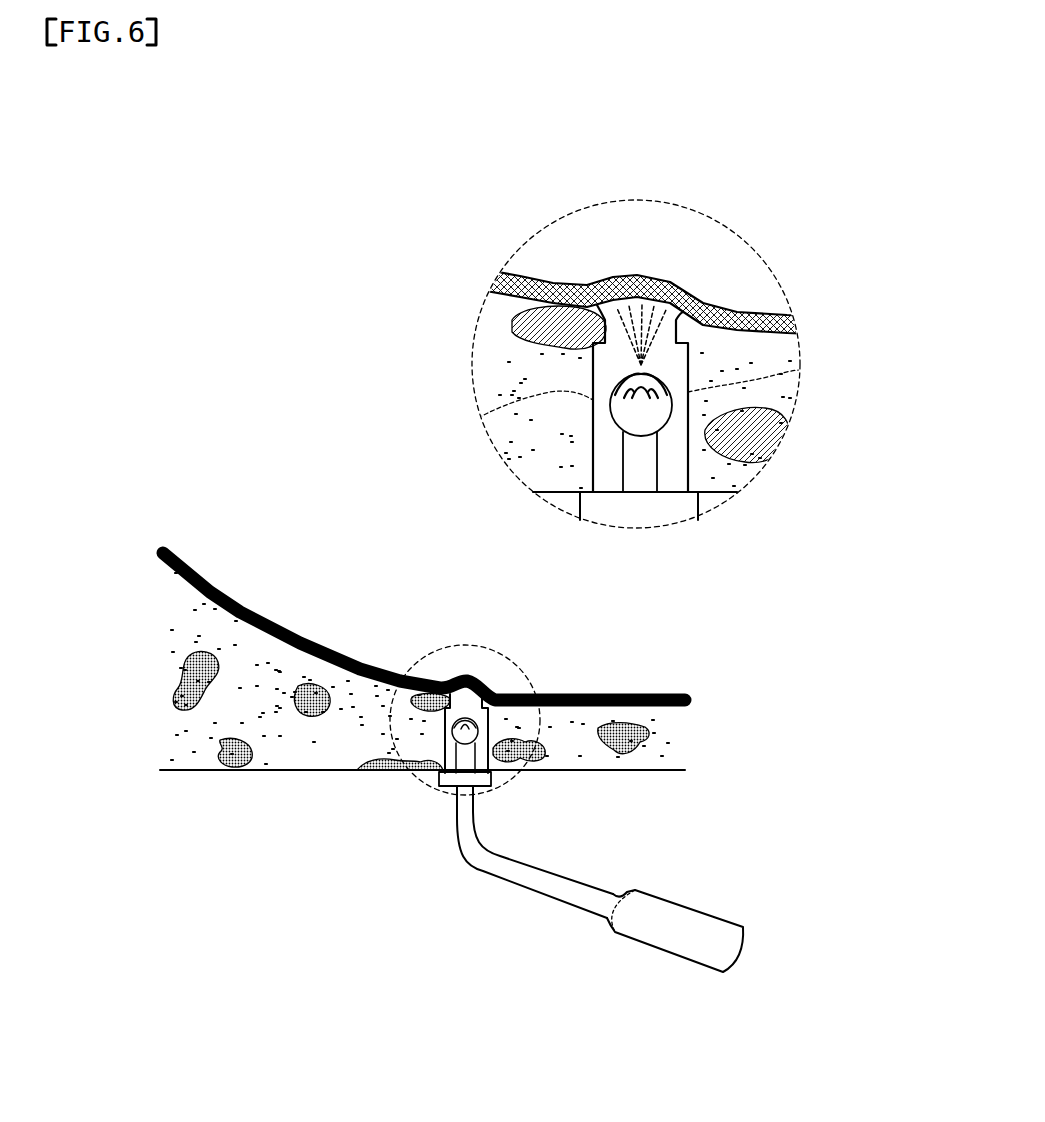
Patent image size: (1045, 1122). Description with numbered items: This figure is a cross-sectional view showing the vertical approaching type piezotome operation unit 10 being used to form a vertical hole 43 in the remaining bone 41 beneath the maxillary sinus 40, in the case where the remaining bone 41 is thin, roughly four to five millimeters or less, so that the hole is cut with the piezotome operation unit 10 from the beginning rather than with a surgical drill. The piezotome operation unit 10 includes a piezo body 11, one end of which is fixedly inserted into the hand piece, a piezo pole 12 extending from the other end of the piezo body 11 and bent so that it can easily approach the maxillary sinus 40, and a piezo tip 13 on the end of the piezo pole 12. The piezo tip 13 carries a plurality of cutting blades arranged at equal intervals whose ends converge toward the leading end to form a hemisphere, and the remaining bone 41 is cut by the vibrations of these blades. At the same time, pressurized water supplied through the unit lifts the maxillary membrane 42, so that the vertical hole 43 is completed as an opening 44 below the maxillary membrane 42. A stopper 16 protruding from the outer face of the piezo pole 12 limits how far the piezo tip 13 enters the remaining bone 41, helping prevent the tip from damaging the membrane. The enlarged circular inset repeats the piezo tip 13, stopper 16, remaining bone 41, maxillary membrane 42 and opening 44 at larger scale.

The piezotome operation unit 10 is at (590, 591).
The piezo body 11 is at (680, 915).
The piezo pole 12 is at (495, 870).
The piezo tip 13 is at (513, 760).
The stopper 16 is at (440, 786).
The maxillary sinus 40 is at (378, 588).
The remaining bone 41 is at (660, 742).
The maxillary membrane 42 is at (650, 695).
The vertical hole 43 is at (417, 765).
The opening 44 is at (607, 280).